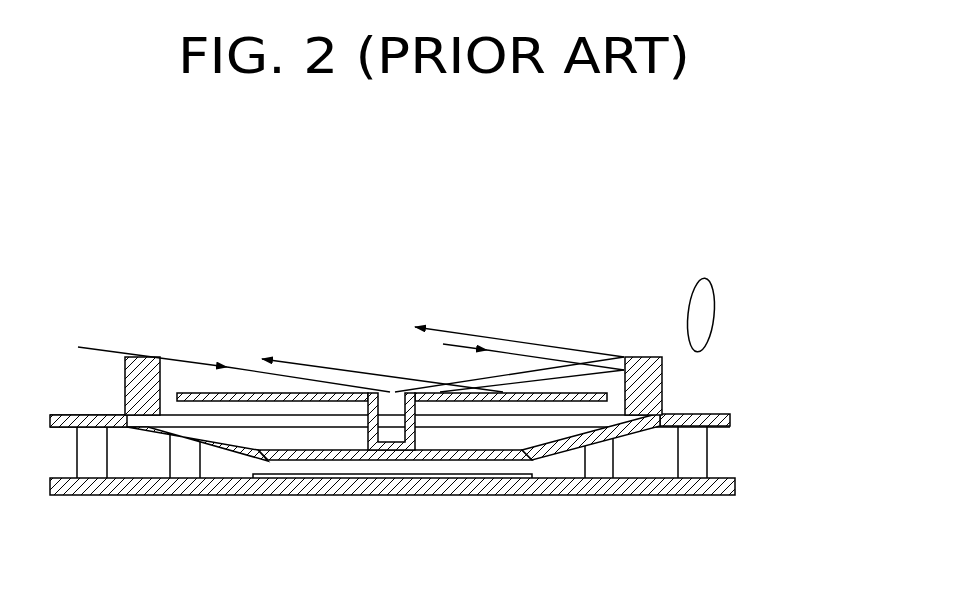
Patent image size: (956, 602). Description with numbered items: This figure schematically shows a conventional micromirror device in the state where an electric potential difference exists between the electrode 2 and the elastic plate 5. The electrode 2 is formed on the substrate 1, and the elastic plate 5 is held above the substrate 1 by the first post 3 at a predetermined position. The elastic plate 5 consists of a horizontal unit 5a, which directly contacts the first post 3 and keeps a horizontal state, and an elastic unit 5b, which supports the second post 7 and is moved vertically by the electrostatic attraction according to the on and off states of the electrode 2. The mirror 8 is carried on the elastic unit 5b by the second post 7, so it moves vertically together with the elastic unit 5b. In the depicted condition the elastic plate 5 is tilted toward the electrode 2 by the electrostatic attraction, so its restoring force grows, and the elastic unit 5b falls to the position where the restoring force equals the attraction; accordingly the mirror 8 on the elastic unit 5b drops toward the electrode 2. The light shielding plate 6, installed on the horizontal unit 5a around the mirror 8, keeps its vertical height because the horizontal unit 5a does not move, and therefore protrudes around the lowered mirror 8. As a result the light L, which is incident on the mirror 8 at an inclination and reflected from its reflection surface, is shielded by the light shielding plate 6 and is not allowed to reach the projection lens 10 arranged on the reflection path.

The substrate 1 is at (603, 487).
The electrode 2 is at (513, 478).
The first post 3 is at (705, 453).
The elastic plate 5 is at (432, 455).
The horizontal unit 5a is at (680, 411).
The elastic unit 5b is at (308, 450).
The light shielding plate 6 is at (647, 360).
The second post 7 is at (418, 455).
The mirror 8 is at (192, 392).
The projection lens 10 is at (713, 302).
The light L is at (89, 346).